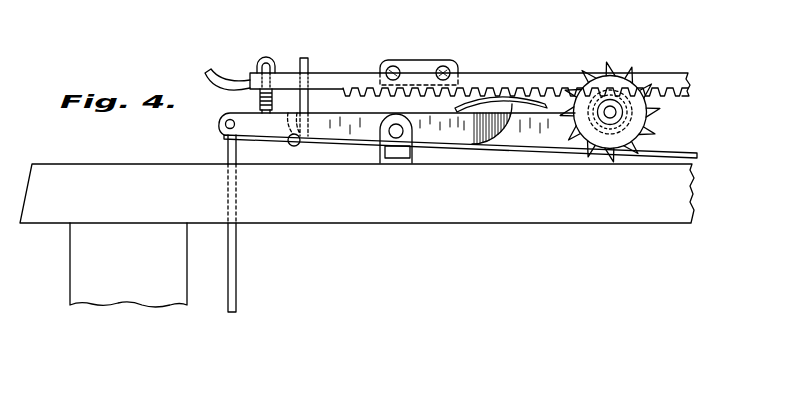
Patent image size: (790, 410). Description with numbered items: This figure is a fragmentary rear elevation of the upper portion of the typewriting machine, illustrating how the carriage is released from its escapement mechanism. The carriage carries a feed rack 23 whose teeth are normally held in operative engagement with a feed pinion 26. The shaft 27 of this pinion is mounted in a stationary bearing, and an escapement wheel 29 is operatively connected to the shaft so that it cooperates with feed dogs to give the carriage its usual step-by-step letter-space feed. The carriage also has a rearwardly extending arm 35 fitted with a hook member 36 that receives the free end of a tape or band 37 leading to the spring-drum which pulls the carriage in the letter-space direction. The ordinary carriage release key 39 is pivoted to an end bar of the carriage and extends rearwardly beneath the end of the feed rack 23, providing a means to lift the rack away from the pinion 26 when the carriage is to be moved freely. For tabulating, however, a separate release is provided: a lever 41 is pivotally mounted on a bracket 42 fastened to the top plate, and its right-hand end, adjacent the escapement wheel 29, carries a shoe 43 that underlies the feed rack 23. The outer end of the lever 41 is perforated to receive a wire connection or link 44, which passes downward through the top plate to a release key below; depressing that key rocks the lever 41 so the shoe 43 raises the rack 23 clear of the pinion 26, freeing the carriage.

The feed rack 23 is at (527, 68).
The feed pinion 26 is at (612, 128).
The shaft 27 is at (617, 115).
The escapement wheel 29 is at (612, 74).
The rearwardly extending arm 35 is at (308, 68).
The hook member 36 is at (289, 142).
The tape or band 37 is at (534, 157).
The carriage release key 39 is at (259, 69).
The lever 41 is at (343, 130).
The bracket 42 is at (413, 146).
The shoe 43 is at (524, 108).
The wire connection or link 44 is at (237, 270).